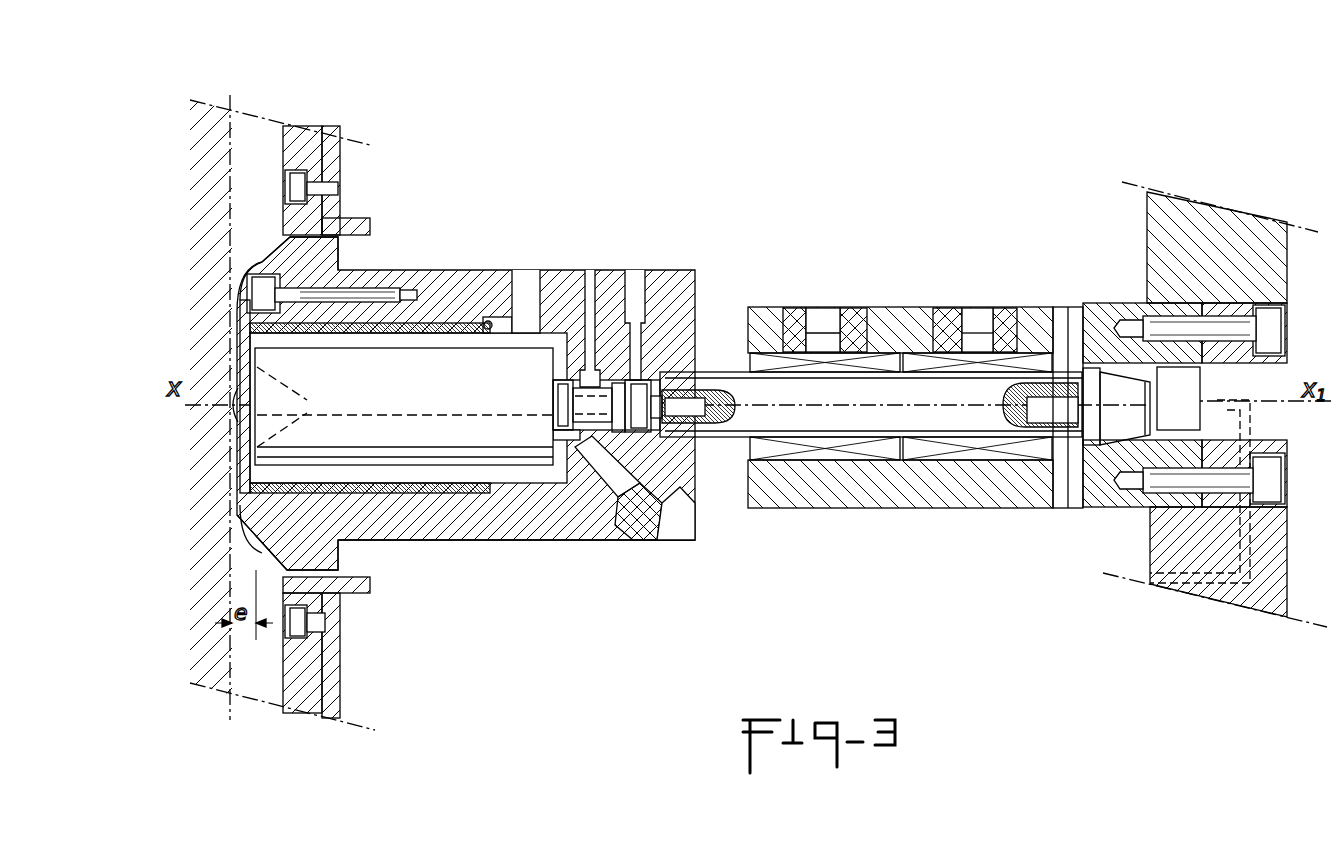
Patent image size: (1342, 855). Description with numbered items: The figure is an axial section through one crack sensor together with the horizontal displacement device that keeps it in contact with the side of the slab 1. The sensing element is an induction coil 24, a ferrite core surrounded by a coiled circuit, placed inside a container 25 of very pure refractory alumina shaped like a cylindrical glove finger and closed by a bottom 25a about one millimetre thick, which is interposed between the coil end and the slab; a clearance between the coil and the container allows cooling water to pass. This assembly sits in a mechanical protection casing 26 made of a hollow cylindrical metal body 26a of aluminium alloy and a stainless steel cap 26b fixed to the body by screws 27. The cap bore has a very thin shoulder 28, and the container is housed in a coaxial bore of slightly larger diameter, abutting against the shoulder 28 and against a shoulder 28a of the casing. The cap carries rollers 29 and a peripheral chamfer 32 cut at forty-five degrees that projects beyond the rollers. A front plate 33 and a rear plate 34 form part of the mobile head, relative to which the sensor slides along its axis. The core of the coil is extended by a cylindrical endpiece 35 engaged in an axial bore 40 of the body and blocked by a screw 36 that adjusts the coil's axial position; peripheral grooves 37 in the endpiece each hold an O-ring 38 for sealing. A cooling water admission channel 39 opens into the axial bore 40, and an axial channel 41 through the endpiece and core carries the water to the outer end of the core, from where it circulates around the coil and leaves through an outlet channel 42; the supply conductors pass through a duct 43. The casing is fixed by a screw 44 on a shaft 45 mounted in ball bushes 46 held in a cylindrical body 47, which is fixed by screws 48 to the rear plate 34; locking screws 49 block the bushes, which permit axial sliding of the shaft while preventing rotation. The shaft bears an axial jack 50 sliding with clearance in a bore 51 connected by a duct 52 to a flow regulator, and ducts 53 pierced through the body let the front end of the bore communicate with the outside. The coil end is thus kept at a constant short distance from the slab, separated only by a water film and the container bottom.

The slab 1 is at (210, 531).
The induction coil 24 is at (405, 387).
The container 25 is at (412, 488).
The bottom 25a is at (245, 448).
The mechanical protection casing 26 is at (556, 549).
The hollow cylindrical metal body 26a is at (520, 515).
The cap 26b is at (290, 250).
The screws 27 is at (262, 292).
The shoulder 28 is at (243, 487).
The shoulder of the casing 28a is at (490, 320).
The rollers 29 is at (252, 268).
The peripheral chamfer 32 is at (270, 562).
The front plate 33 is at (300, 137).
The rear plate 34 is at (1236, 242).
The cylindrical endpiece 35 is at (605, 393).
The screw 36 is at (590, 287).
The peripheral grooves 37 is at (568, 415).
The O-ring 38 is at (555, 385).
The cooling water admission channel 39 is at (636, 290).
The axial bore 40 is at (650, 378).
The axial channel 41 is at (315, 383).
The outlet channel 42 is at (528, 290).
The duct 43 is at (645, 520).
The screw 44 is at (610, 437).
The shaft 45 is at (930, 404).
The ball bushes 46 is at (878, 365).
The cylindrical body 47 is at (905, 318).
The screws 48 is at (1268, 325).
The locking screws 49 is at (823, 312).
The axial jack 50 is at (1092, 378).
The bore 51 is at (1135, 394).
The duct 52 is at (1265, 390).
The ducts 53 is at (1063, 490).